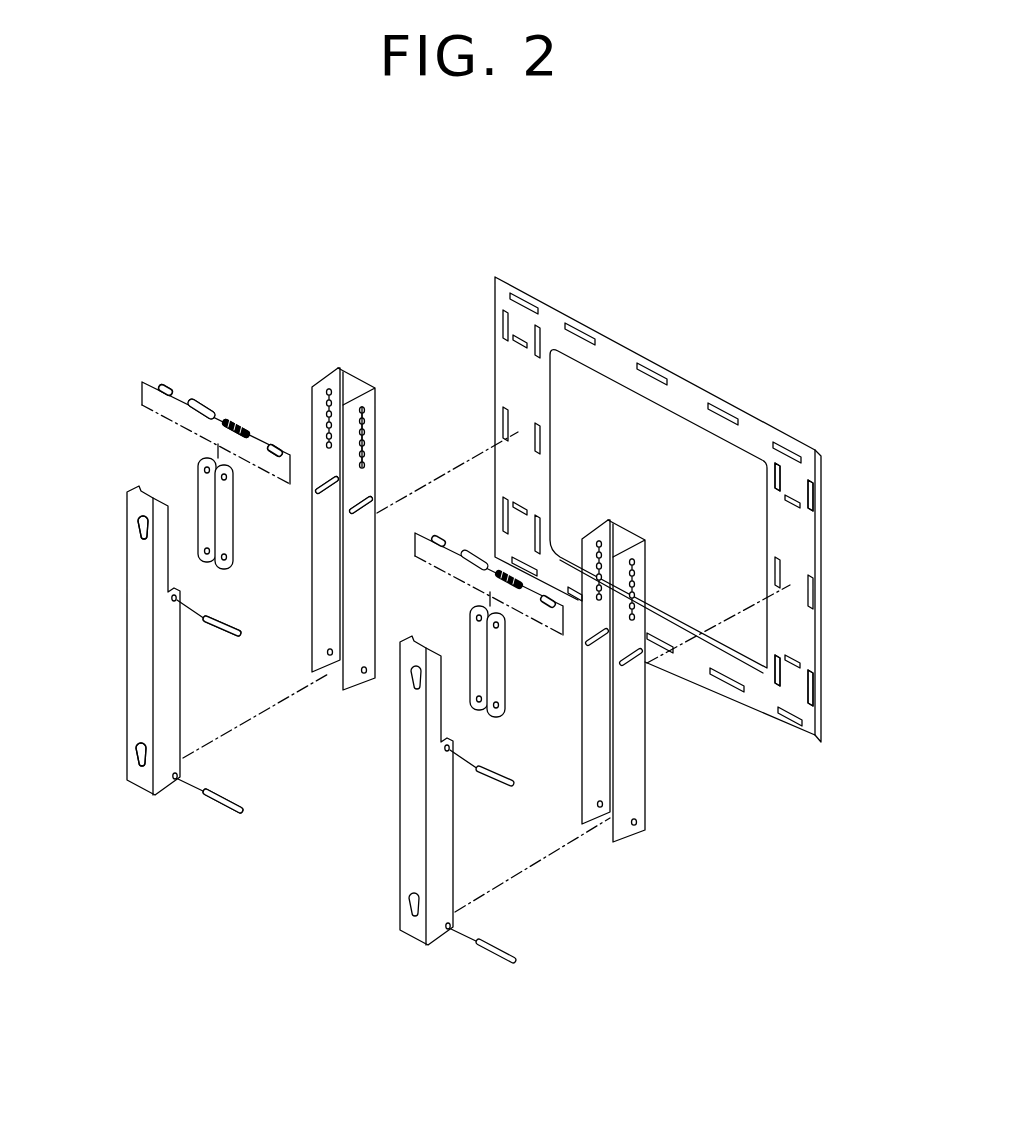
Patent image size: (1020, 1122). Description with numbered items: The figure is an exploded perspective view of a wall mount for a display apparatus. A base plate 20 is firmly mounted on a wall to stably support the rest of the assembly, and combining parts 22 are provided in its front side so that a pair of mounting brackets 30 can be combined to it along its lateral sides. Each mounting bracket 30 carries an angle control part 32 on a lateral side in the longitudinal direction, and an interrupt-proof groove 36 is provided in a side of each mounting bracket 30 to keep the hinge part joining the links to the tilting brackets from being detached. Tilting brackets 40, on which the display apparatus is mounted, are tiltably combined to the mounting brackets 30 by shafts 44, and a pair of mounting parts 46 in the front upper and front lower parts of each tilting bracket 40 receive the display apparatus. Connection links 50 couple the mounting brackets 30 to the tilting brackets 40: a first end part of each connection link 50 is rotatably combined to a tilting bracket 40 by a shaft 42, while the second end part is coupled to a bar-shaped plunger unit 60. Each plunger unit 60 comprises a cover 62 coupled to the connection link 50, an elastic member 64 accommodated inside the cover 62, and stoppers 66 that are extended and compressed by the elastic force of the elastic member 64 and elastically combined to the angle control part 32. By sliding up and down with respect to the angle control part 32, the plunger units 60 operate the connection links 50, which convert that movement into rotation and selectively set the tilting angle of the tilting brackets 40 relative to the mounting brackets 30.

The base plate 20 is at (708, 378).
The combining parts 22 is at (790, 497).
The mounting brackets 30 is at (314, 362).
The angle control part 32 is at (366, 410).
The interrupt-proof groove 36 is at (357, 503).
The tilting brackets 40 is at (118, 522).
The shafts 42 is at (222, 638).
The shafts 44 is at (212, 803).
The mounting parts 46 is at (135, 748).
The connection links 50 is at (190, 479).
The plunger units 60 is at (139, 372).
The cover 62 is at (201, 404).
The elastic member 64 is at (239, 424).
The stoppers 66 is at (164, 387).